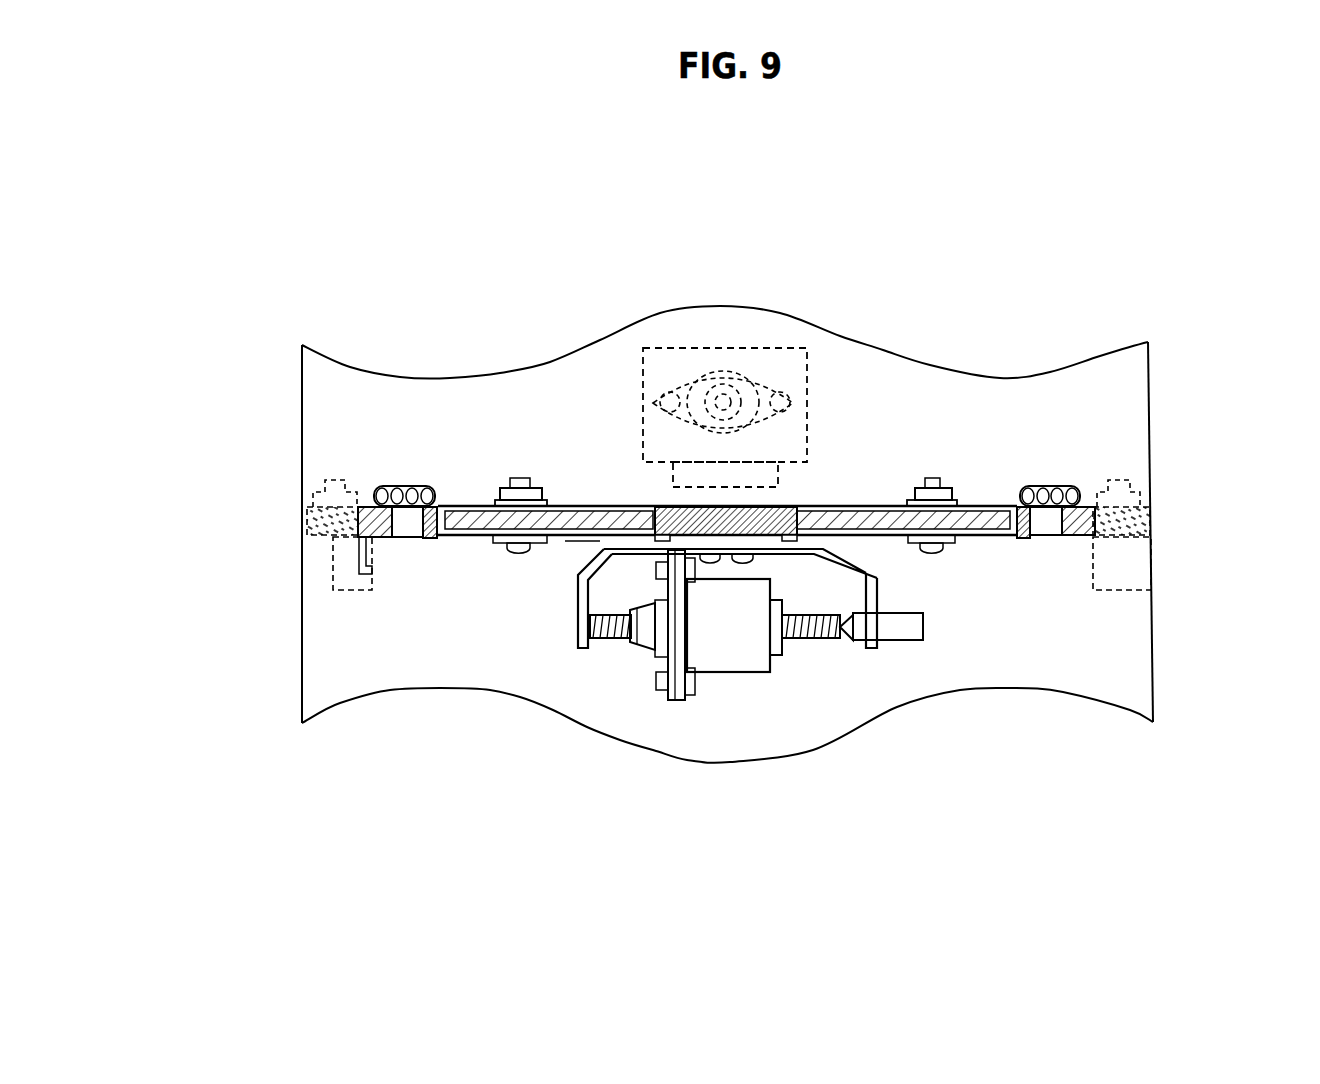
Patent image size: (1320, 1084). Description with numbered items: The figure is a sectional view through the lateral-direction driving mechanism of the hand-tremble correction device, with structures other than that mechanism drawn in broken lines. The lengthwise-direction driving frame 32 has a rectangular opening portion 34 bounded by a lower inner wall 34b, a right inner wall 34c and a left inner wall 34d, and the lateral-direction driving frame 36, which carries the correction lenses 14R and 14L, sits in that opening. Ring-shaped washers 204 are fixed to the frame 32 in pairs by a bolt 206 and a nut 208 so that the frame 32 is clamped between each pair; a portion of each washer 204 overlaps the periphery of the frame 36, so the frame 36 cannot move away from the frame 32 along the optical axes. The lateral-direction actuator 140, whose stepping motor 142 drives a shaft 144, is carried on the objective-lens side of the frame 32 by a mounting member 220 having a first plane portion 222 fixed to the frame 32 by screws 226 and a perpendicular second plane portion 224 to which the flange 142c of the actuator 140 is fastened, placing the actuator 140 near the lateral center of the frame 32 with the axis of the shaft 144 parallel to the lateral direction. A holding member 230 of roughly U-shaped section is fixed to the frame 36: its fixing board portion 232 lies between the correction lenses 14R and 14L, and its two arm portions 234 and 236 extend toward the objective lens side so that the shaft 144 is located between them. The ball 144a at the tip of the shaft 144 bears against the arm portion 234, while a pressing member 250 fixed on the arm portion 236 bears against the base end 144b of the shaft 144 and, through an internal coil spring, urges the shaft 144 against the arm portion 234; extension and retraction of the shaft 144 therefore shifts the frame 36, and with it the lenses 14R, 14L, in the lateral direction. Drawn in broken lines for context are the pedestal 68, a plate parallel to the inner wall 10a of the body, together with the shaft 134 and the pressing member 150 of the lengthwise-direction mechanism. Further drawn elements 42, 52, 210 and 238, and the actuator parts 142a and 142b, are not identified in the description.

The inner wall 10a is at (1157, 683).
The correction lens 14R is at (570, 503).
The correction lens 14L is at (1008, 490).
The lengthwise-direction driving frame 32 is at (370, 505).
The opening portion 34 is at (1038, 553).
The lower inner wall 34b is at (403, 538).
The right inner wall 34c is at (1055, 542).
The left inner wall 34d is at (358, 574).
The lateral-direction driving frame 36 is at (430, 546).
The hidden bracket 42 is at (306, 522).
The hidden bracket 52 is at (1150, 525).
The pedestal 68 is at (660, 345).
The shaft 134 is at (706, 348).
The pressing member 150 is at (742, 365).
The washer 204 is at (493, 503).
The bolt 206 is at (521, 546).
The nut 208 is at (535, 503).
The spring 210 is at (380, 487).
The mounting member 220 is at (623, 503).
The first plane portion 222 is at (548, 547).
The second plane portion 224 is at (675, 700).
The screw 226 is at (578, 567).
The holding member 230 is at (867, 545).
The fixing board portion 232 is at (800, 505).
The arm portion 234 is at (580, 650).
The arm portion 236 is at (897, 640).
The boss 238 is at (708, 549).
The lateral-direction actuator 140 is at (757, 712).
The stepping motor 142 is at (712, 653).
The motor housing 142a is at (731, 687).
The coupling 142b is at (645, 650).
The flange 142c is at (683, 700).
The shaft 144 is at (817, 640).
The ball 144a is at (660, 676).
The base end 144b is at (843, 640).
The pressing member 250 is at (908, 623).